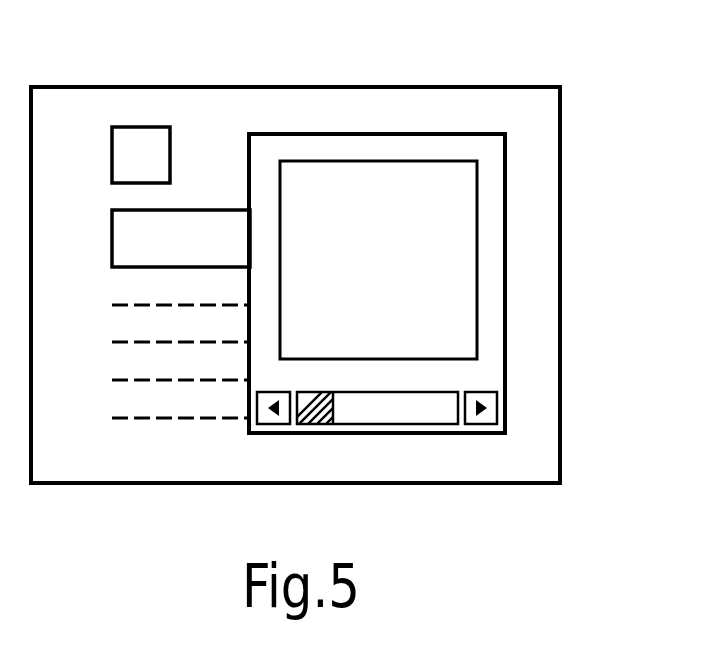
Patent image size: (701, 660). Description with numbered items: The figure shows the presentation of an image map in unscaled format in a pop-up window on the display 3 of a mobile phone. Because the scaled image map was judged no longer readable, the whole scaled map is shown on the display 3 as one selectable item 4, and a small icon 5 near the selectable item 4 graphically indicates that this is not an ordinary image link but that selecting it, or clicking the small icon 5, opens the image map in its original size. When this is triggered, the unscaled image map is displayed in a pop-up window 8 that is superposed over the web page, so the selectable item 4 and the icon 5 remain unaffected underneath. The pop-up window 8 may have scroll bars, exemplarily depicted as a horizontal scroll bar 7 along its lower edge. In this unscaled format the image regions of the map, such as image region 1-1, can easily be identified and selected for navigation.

The image region 1-1 is at (397, 161).
The display 3 is at (560, 168).
The selectable item 4 is at (112, 228).
The small icon 5 is at (112, 145).
The horizontal scroll bar 7 is at (423, 424).
The pop-up window 8 is at (505, 283).